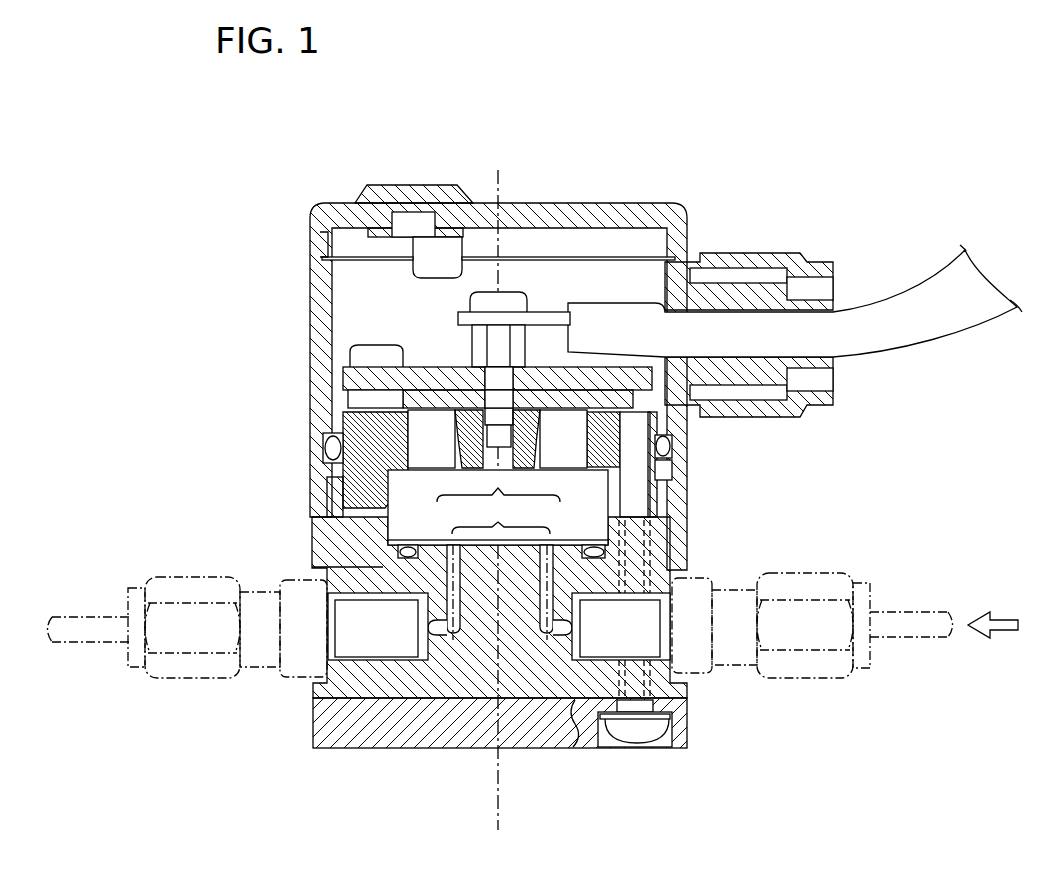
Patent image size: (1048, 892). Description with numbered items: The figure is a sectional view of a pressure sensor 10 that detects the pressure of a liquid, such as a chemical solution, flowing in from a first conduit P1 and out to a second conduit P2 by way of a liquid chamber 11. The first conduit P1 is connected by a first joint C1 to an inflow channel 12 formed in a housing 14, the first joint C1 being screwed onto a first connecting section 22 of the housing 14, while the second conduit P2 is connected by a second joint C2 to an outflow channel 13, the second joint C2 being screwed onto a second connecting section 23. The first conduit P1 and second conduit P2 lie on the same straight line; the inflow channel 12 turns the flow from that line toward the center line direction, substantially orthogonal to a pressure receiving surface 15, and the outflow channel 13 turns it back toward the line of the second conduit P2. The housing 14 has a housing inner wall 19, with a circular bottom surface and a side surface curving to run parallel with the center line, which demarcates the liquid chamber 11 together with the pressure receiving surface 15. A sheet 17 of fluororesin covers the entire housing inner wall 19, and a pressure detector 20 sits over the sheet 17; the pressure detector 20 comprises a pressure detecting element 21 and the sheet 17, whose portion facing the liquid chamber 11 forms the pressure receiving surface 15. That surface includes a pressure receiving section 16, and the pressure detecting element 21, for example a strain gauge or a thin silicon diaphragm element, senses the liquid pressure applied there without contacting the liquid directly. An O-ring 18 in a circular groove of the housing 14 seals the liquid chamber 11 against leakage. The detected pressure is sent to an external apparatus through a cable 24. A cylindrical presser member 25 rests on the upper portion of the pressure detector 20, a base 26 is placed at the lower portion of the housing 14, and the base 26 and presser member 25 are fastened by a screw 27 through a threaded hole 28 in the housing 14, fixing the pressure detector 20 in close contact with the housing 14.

The pressure sensor 10 is at (600, 82).
The liquid chamber 11 is at (556, 543).
The inflow channel 12 is at (540, 622).
The outflow channel 13 is at (447, 580).
The housing 14 is at (325, 525).
The pressure receiving surface 15 is at (498, 447).
The pressure receiving section 16 is at (498, 511).
The sheet 17 is at (417, 542).
The O-ring 18 is at (400, 552).
The housing inner wall 19 is at (482, 553).
The pressure detector 20 is at (243, 451).
The pressure detecting element 21 is at (597, 482).
The first connecting section 22 is at (590, 667).
The second connecting section 23 is at (403, 660).
The cable 24 is at (908, 352).
The presser member 25 is at (345, 470).
The base 26 is at (453, 742).
The screw 27 is at (647, 728).
The threaded hole 28 is at (655, 550).
The first conduit P1 is at (908, 637).
The second conduit P2 is at (85, 643).
The first joint C1 is at (803, 678).
The second joint C2 is at (197, 678).